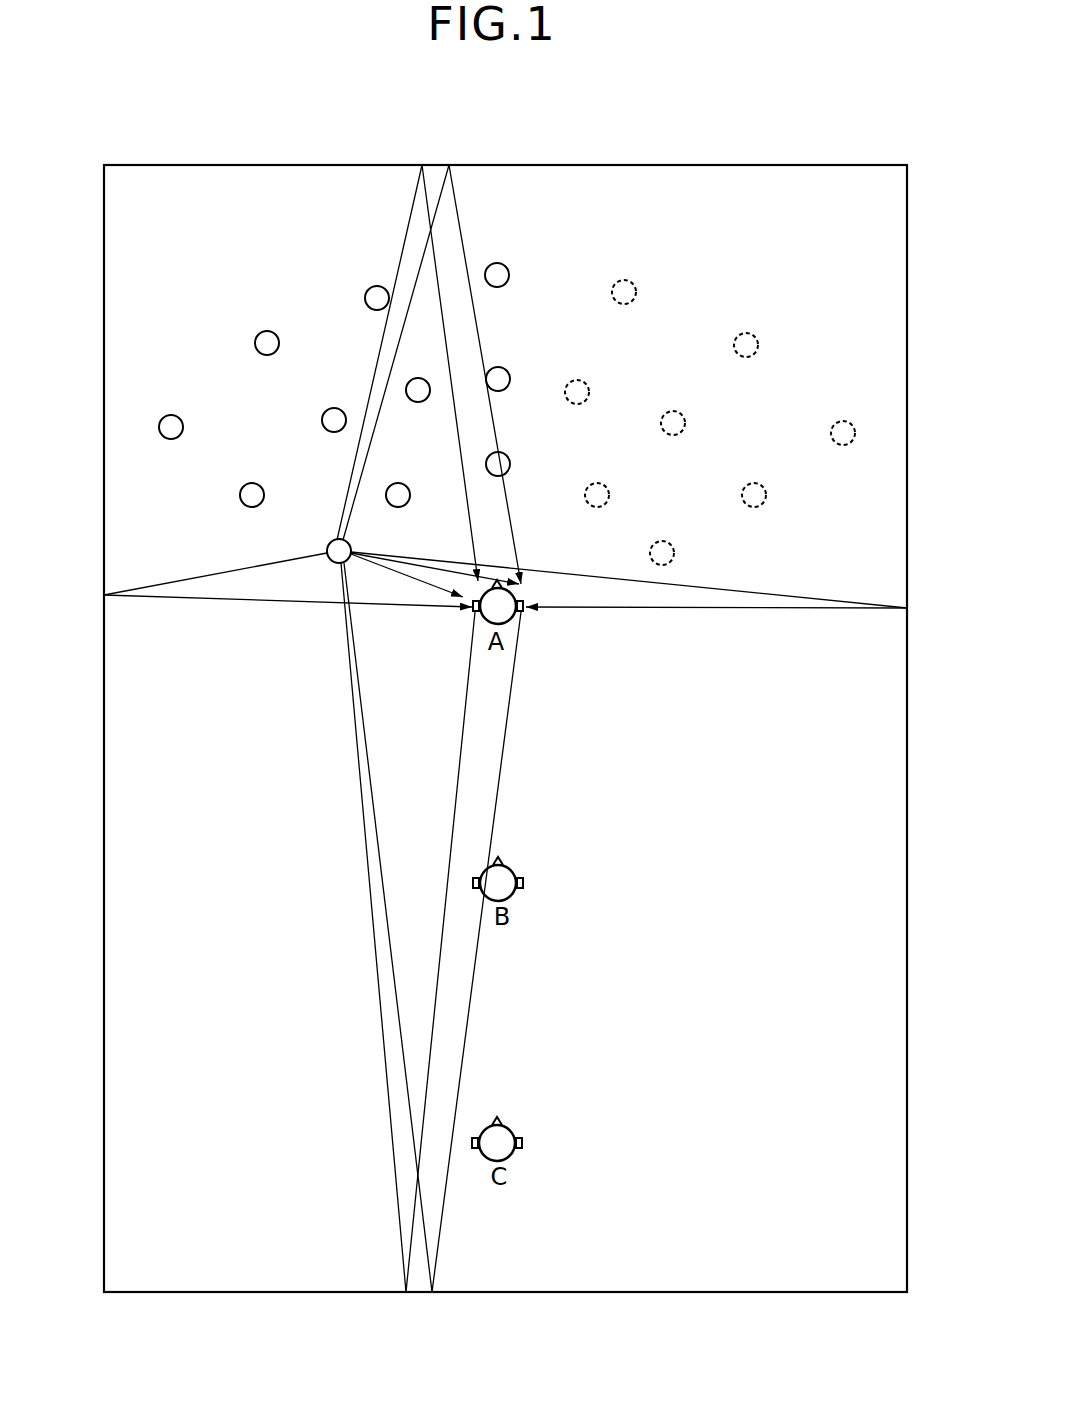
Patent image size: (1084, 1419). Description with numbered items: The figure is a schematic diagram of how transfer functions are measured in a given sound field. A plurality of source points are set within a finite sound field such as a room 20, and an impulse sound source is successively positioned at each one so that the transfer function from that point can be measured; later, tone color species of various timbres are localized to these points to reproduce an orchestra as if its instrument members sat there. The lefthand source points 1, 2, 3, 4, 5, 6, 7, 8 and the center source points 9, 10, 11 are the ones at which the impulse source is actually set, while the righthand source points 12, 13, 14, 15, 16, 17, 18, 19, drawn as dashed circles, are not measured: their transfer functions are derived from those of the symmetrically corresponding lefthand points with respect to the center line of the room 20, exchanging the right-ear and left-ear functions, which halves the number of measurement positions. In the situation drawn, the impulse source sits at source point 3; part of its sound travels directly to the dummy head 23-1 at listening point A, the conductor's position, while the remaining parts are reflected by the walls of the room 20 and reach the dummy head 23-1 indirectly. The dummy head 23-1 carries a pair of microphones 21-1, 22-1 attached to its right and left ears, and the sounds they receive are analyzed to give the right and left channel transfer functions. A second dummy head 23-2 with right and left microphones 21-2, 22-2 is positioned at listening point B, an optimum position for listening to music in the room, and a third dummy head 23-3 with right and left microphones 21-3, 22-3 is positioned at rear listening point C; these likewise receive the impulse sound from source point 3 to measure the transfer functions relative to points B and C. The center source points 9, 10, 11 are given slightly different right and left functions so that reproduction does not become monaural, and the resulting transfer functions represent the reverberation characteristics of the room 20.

The source point 1 is at (171, 440).
The source point 2 is at (252, 505).
The source point 3 is at (333, 559).
The source point 4 is at (267, 354).
The source point 5 is at (334, 433).
The source point 6 is at (403, 501).
The source point 7 is at (376, 309).
The source point 8 is at (418, 401).
The source point 9 is at (497, 288).
The source point 10 is at (502, 389).
The source point 11 is at (509, 466).
The source point 12 is at (626, 303).
The source point 13 is at (579, 405).
The source point 14 is at (750, 357).
The source point 15 is at (676, 434).
The source point 16 is at (604, 506).
The source point 17 is at (845, 444).
The source point 18 is at (765, 500).
The source point 19 is at (673, 555).
The room 20 is at (505, 1292).
The microphone 21-1 is at (525, 612).
The microphone 22-1 is at (473, 609).
The dummy head 23-1 is at (502, 600).
The microphone 21-2 is at (522, 880).
The microphone 22-2 is at (476, 882).
The dummy head 23-2 is at (498, 887).
The microphone 21-3 is at (522, 1142).
The microphone 22-3 is at (472, 1143).
The dummy head 23-3 is at (502, 1148).